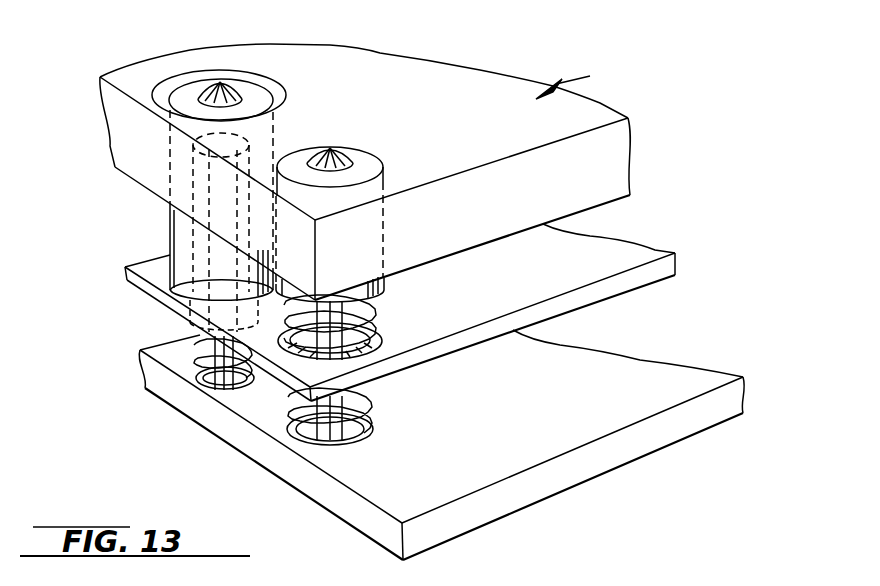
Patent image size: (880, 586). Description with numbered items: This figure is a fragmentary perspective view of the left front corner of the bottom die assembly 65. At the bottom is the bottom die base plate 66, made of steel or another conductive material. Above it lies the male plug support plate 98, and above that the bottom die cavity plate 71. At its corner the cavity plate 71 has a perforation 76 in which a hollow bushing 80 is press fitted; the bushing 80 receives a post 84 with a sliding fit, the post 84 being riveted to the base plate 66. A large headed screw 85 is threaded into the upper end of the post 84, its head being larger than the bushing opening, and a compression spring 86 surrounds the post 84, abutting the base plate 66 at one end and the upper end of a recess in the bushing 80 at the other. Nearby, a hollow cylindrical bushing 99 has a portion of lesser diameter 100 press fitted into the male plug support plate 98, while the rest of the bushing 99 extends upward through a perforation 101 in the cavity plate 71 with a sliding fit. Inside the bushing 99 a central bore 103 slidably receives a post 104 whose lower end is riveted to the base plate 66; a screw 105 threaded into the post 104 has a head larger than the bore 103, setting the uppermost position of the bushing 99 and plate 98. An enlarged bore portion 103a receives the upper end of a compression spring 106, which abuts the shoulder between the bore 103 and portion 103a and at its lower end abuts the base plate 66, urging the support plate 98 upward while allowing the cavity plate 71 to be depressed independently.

The bottom die assembly 65 is at (575, 81).
The bottom die base plate 66 is at (727, 397).
The bottom die cavity plate 71 is at (610, 155).
The perforation 76 is at (384, 168).
The bushing 80 is at (362, 165).
The post 84 is at (368, 326).
The large headed screw 85 is at (333, 152).
The compression spring 86 is at (370, 416).
The male plug support plate 98 is at (676, 262).
The hollow cylindrical bushing 99 is at (176, 226).
The portion of lesser diameter 100 is at (175, 318).
The perforation 101 is at (284, 92).
The central bore 103 is at (203, 126).
The enlarged bore portion 103a is at (194, 172).
The post 104 is at (197, 388).
The screw 105 is at (223, 86).
The compression spring 106 is at (233, 392).